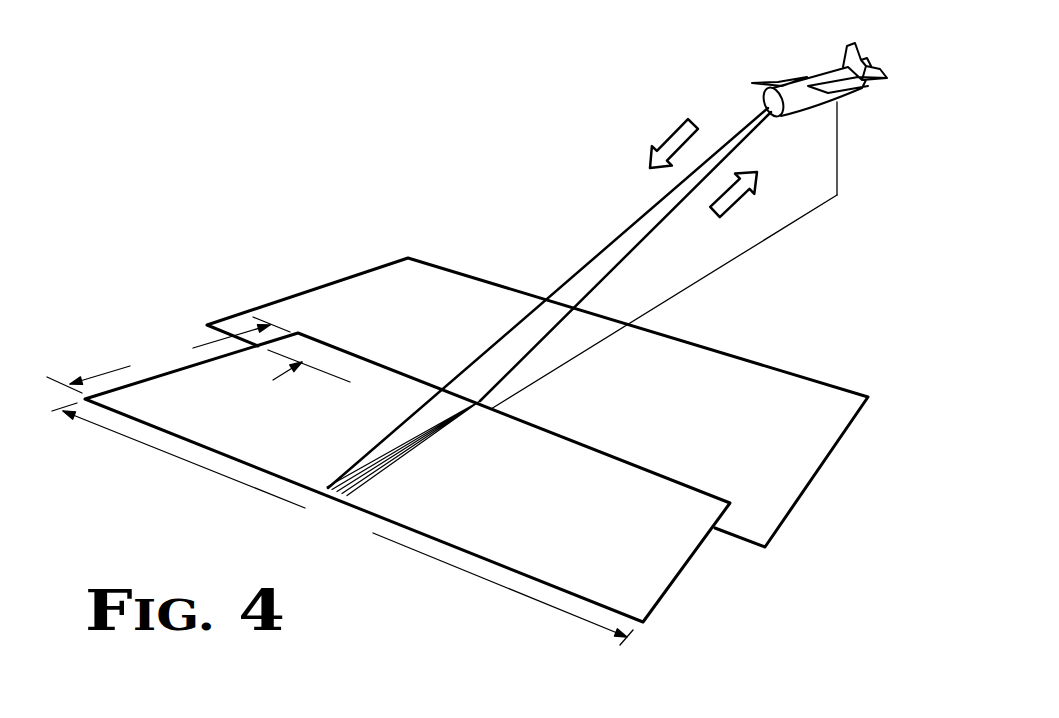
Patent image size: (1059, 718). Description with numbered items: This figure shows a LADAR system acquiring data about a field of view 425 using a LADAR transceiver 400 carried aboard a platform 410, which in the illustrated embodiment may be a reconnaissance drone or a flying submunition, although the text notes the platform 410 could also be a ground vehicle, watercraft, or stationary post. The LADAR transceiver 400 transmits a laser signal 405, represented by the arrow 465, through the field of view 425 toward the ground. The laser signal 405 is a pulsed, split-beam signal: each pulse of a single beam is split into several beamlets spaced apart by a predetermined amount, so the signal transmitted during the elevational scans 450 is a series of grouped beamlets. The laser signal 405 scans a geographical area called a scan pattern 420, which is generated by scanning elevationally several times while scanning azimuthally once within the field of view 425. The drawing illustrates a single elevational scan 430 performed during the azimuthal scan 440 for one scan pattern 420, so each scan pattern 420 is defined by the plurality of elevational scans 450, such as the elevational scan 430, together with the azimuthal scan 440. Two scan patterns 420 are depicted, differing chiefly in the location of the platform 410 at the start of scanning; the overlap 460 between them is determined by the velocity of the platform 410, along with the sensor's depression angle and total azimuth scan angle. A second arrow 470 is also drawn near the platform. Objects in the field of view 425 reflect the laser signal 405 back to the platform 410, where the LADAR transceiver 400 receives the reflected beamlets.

The LADAR transceiver 400 is at (769, 101).
The laser signal 405 is at (578, 289).
The platform 410 is at (807, 72).
The scan pattern 420 is at (669, 425).
The field of view 425 is at (381, 201).
The elevational scan 430 is at (436, 446).
The azimuthal scan 440 is at (342, 524).
The elevational scans 450 is at (168, 355).
The overlap 460 is at (340, 343).
The arrow 465 is at (661, 140).
The direction of travel 470 is at (766, 187).